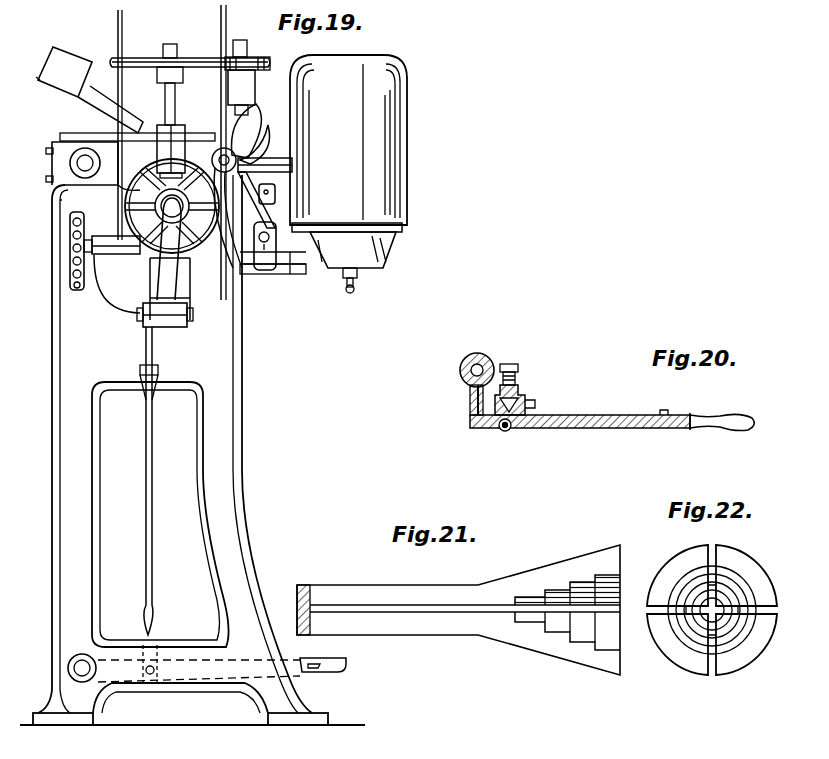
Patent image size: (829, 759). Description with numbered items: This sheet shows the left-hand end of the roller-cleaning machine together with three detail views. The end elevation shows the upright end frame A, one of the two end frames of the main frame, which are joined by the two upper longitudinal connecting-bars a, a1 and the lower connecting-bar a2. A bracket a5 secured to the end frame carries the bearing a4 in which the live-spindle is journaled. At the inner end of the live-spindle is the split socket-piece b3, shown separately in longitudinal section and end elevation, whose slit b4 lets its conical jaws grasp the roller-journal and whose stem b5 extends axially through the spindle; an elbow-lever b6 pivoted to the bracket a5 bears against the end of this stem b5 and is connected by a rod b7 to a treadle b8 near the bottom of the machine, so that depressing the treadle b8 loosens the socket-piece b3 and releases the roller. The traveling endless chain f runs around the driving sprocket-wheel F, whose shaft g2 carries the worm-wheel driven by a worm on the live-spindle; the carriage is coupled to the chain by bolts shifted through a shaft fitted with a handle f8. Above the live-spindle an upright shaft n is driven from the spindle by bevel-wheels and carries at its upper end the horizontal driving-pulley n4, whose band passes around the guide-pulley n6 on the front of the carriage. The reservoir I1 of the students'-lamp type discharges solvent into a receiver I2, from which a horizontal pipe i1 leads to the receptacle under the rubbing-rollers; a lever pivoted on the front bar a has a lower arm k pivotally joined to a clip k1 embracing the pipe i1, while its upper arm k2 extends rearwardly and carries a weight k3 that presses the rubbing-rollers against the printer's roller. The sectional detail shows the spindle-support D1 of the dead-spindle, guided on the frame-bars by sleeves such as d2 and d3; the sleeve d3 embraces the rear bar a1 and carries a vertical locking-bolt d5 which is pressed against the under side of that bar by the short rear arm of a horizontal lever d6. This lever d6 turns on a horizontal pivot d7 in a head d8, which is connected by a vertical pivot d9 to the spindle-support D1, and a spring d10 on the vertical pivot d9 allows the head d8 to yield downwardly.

In FIG. 19, the upright end frame A is at (180, 429).
In FIG. 19, the upper longitudinal connecting-bar a is at (218, 138).
In FIG. 19, the upper longitudinal connecting-bar a1 is at (88, 165).
In FIG. 20, the upper longitudinal connecting-bar a1 is at (462, 372).
In FIG. 19, the lower connecting-bar a2 is at (84, 662).
In FIG. 19, the bearing a4 is at (172, 206).
In FIG. 19, the bracket a5 is at (192, 331).
In FIG. 21, the socket-piece b3 is at (555, 612).
In FIG. 22, the socket-piece b3 is at (712, 610).
In FIG. 21, the split b4 is at (400, 615).
In FIG. 22, the split b4 is at (708, 566).
In FIG. 21, the stem b5 is at (458, 610).
In FIG. 19, the elbow-lever b6 is at (150, 325).
In FIG. 19, the rod b7 is at (156, 481).
In FIG. 19, the treadle b8 is at (325, 678).
In FIG. 19, the traveling endless chain f is at (68, 240).
In FIG. 19, the driving sprocket-wheel F is at (68, 262).
In FIG. 19, the handle f8 is at (256, 134).
In FIG. 19, the shaft g2 is at (80, 272).
In FIG. 19, the upright shaft n is at (175, 111).
In FIG. 19, the horizontal driving-pulley n4 is at (136, 58).
In FIG. 19, the guide-pulley n6 is at (249, 76).
In FIG. 19, the lower arm k is at (256, 200).
In FIG. 19, the clip k1 is at (266, 272).
In FIG. 19, the upper arm k2 is at (82, 104).
In FIG. 19, the weight k3 is at (46, 56).
In FIG. 19, the horizontal pipe i1 is at (283, 262).
In FIG. 19, the reservoir I1 is at (236, 166).
In FIG. 19, the receiver I2 is at (388, 252).
In FIG. 20, the sleeve d2 is at (506, 363).
In FIG. 20, the sleeve d3 is at (474, 362).
In FIG. 20, the vertical locking-bolt d5 is at (470, 410).
In FIG. 19, the horizontal lever d6 is at (276, 216).
In FIG. 20, the horizontal lever d6 is at (612, 413).
In FIG. 20, the horizontal pivot d7 is at (506, 430).
In FIG. 20, the head d8 is at (496, 430).
In FIG. 20, the vertical pivot d9 is at (522, 406).
In FIG. 20, the spring d10 is at (517, 372).
In FIG. 20, the spindle-support D1 is at (516, 388).